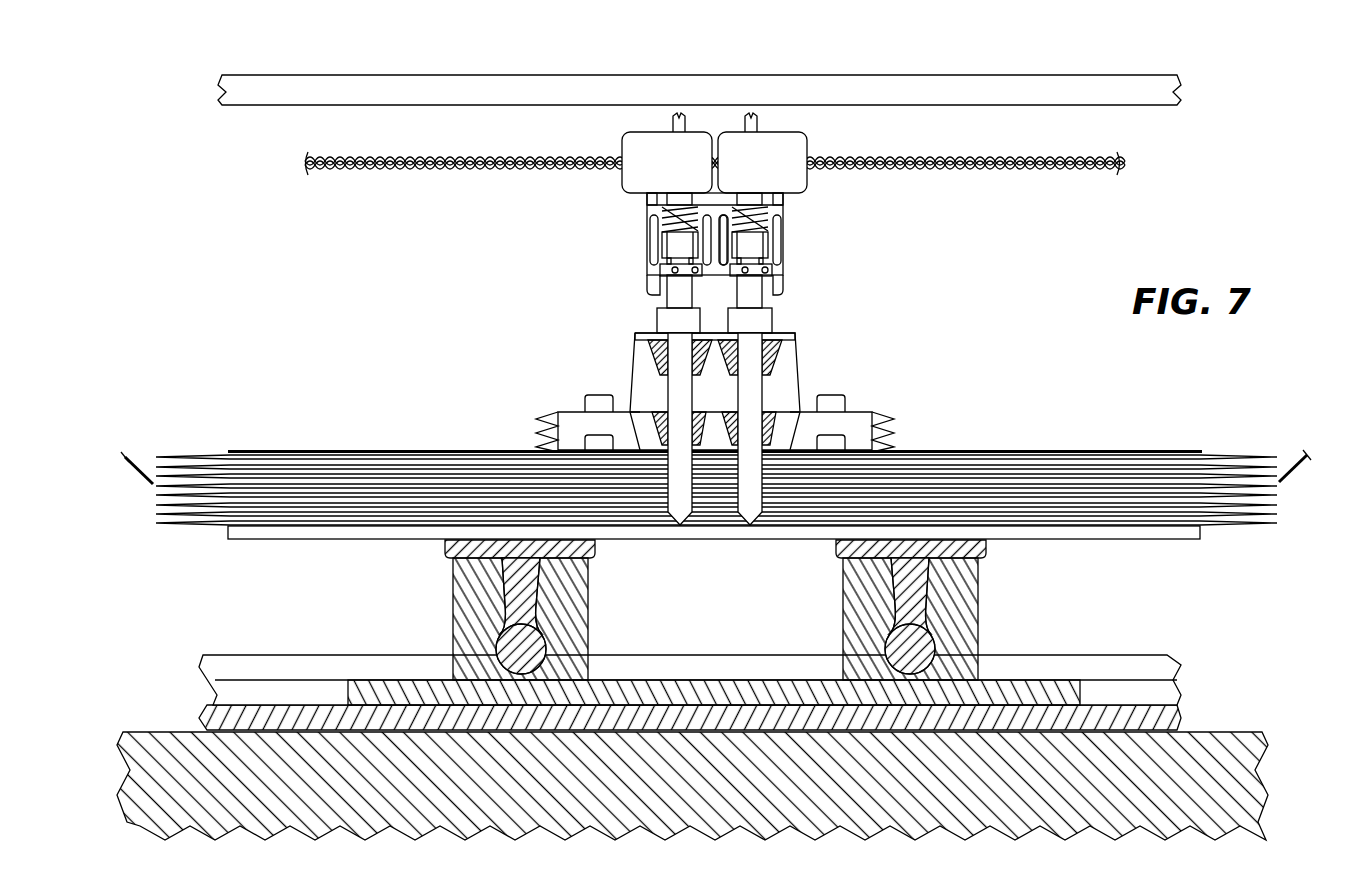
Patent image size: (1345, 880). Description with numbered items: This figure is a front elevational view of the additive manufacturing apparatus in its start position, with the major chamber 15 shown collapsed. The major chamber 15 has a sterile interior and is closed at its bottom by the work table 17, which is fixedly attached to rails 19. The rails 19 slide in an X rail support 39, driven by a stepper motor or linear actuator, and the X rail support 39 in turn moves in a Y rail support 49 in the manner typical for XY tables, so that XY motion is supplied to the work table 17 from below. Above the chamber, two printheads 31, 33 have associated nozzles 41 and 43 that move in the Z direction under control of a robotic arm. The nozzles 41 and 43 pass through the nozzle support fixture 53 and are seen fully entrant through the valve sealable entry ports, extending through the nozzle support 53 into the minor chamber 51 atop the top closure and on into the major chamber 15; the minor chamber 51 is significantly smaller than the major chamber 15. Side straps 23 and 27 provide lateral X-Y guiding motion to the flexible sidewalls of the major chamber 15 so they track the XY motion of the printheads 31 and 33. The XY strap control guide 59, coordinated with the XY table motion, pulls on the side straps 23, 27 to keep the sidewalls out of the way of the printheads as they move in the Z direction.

The XY strap control guide 59 is at (1027, 90).
The printhead 33 is at (632, 180).
The printhead 31 is at (798, 180).
The nozzle support fixture 53 is at (797, 353).
The nozzle 43 is at (678, 390).
The nozzle 41 is at (750, 390).
The minor chamber 51 is at (890, 436).
The side strap 27 is at (139, 452).
The side strap 23 is at (1292, 462).
The major chamber 15 is at (1277, 500).
The work table 17 is at (1145, 535).
The rails 19 is at (507, 643).
The X rail support 39 is at (467, 650).
The Y rail support 49 is at (1108, 692).